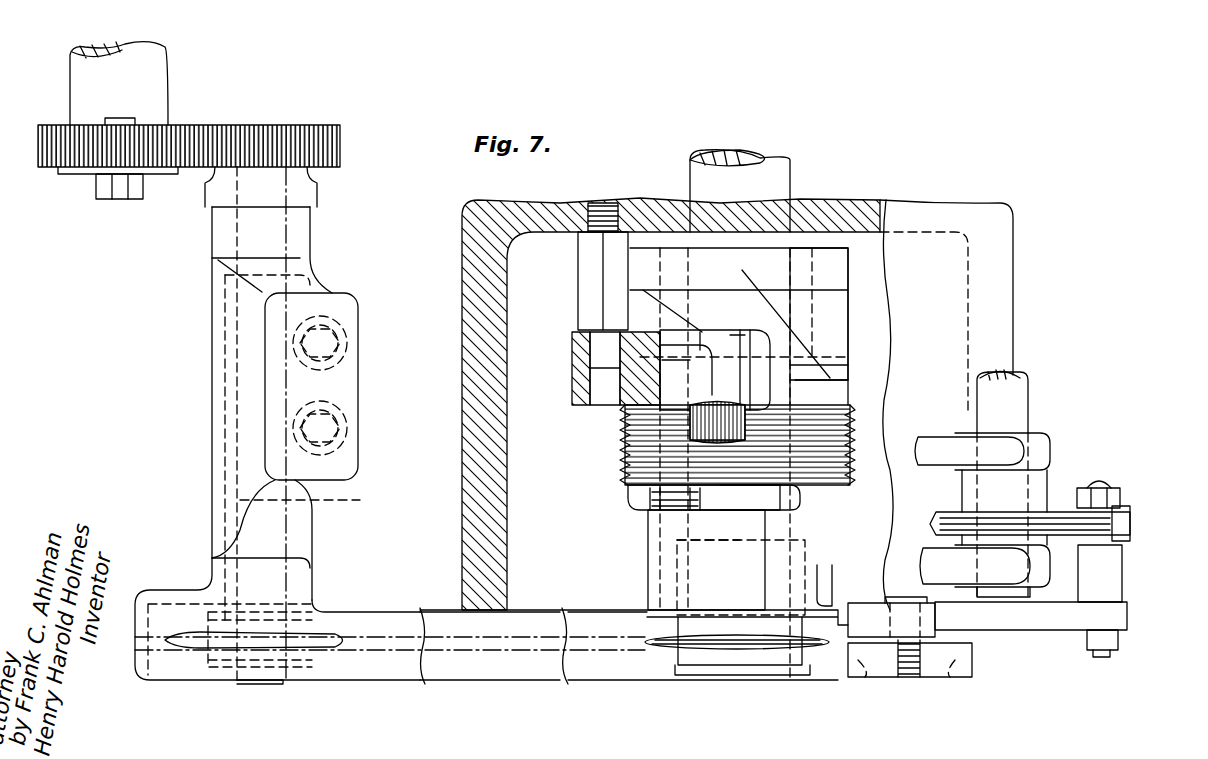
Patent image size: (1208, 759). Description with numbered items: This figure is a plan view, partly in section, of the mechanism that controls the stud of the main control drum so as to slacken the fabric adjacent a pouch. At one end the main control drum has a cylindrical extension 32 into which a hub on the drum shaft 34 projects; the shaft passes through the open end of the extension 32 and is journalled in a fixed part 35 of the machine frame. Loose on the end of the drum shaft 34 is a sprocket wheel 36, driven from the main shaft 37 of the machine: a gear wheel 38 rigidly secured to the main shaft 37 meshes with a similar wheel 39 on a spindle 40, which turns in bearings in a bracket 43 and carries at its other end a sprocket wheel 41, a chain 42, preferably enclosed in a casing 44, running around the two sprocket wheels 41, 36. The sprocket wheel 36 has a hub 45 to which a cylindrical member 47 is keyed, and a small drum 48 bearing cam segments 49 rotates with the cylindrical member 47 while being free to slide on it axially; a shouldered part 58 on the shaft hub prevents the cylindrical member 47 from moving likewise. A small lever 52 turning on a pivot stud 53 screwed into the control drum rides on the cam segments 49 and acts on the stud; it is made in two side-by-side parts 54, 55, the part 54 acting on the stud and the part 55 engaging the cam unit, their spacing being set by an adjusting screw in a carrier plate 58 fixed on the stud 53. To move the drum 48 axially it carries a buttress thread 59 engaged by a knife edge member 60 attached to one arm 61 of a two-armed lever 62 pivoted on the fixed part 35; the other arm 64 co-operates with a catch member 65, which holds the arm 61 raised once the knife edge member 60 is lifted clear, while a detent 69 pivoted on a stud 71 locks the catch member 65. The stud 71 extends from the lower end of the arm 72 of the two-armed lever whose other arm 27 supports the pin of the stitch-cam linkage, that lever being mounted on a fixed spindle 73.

The arm 27 is at (1010, 448).
The extension 32 is at (476, 440).
The drum shaft 34 is at (778, 173).
The fixed part 35 is at (975, 674).
The sprocket wheel 36 is at (815, 650).
The main shaft 37 is at (150, 80).
The gear wheel 38 is at (52, 125).
The gear wheel 39 is at (342, 145).
The spindle 40 is at (312, 500).
The sprocket wheel 41 is at (165, 640).
The chain 42 is at (390, 650).
The bracket 43 is at (310, 290).
The casing 44 is at (378, 598).
The hub 45 is at (674, 570).
The cylindrical member 47 is at (648, 582).
The small drum 48 is at (838, 343).
The cam segments 49 is at (718, 306).
The lever 52 is at (572, 392).
The pivot stud 53 is at (582, 262).
The lever part 54 is at (580, 406).
The lever part 55 is at (572, 350).
The carrier plate 58 is at (636, 345).
The buttress thread 59 is at (846, 456).
The knife edge member 60 is at (630, 484).
The arm 61 is at (737, 500).
The two-armed lever 62 is at (780, 572).
The arm 64 is at (832, 606).
The catch member 65 is at (875, 618).
The detent 69 is at (1070, 625).
The stud 71 is at (1115, 580).
The arm 72 is at (1132, 525).
The fixed spindle 73 is at (1005, 385).